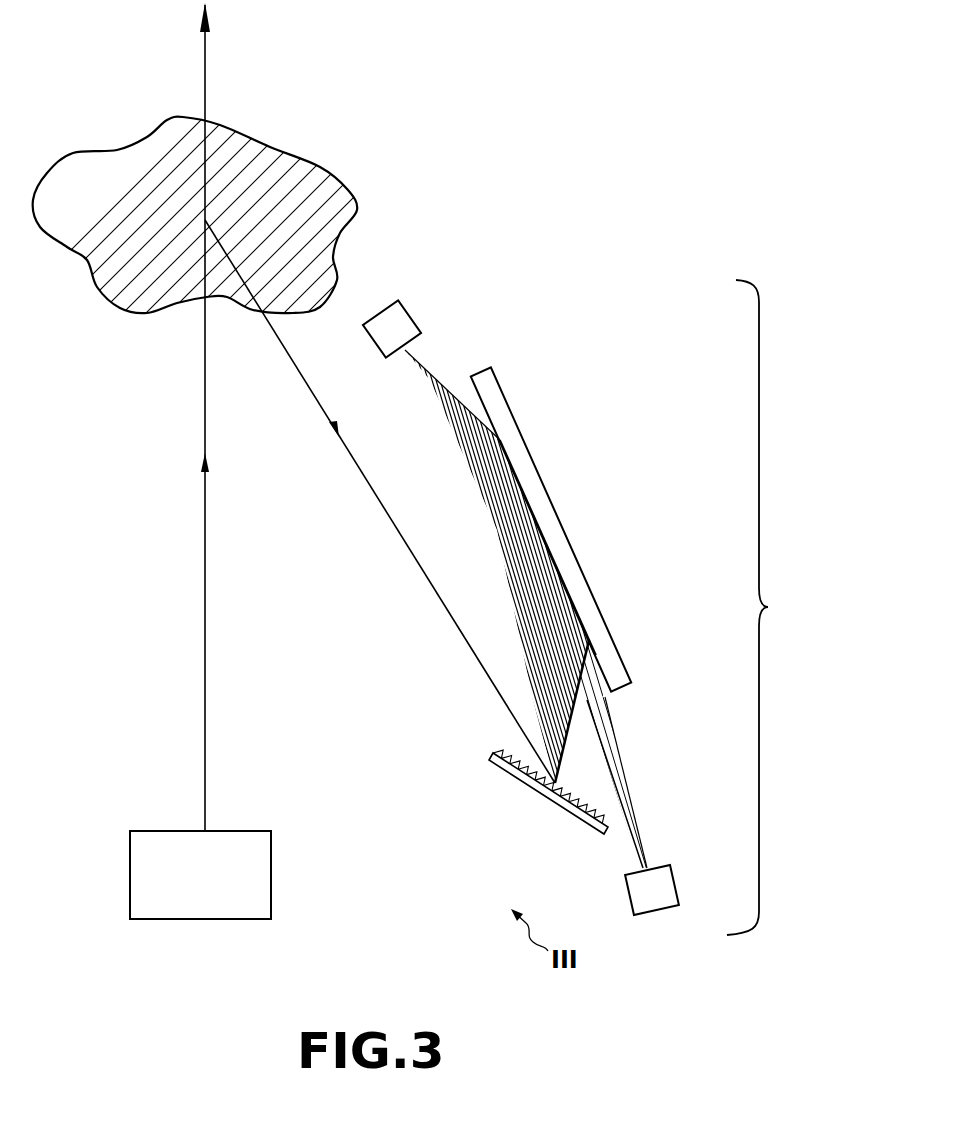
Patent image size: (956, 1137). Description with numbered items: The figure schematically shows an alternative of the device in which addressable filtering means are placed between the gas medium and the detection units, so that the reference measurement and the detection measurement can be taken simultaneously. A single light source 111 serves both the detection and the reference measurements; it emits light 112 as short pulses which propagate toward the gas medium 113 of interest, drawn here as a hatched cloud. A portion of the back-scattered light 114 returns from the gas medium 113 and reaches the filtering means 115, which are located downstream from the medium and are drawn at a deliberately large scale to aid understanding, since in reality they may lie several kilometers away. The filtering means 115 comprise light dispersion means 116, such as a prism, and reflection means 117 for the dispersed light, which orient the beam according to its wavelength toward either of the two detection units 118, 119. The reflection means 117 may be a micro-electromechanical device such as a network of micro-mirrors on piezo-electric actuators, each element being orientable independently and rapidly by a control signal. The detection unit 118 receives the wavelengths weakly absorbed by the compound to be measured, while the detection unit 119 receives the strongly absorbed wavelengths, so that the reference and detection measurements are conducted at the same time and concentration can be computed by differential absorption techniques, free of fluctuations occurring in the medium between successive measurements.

The light source 111 is at (220, 889).
The light 112 is at (206, 511).
The gas medium 113 is at (355, 190).
The back-scattered light 114 is at (306, 385).
The filtering means 115 is at (769, 607).
The light dispersion means 116 is at (553, 806).
The reflection means 117 is at (551, 498).
The detection unit 118 is at (407, 289).
The detection unit 119 is at (655, 906).